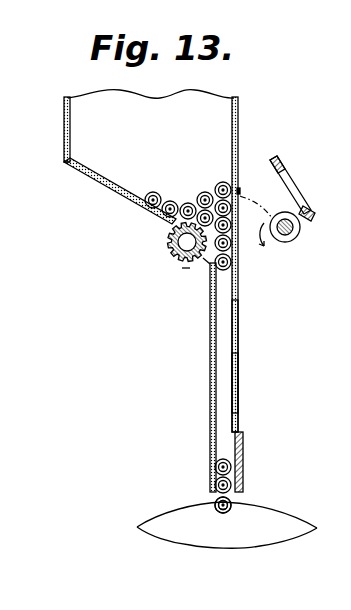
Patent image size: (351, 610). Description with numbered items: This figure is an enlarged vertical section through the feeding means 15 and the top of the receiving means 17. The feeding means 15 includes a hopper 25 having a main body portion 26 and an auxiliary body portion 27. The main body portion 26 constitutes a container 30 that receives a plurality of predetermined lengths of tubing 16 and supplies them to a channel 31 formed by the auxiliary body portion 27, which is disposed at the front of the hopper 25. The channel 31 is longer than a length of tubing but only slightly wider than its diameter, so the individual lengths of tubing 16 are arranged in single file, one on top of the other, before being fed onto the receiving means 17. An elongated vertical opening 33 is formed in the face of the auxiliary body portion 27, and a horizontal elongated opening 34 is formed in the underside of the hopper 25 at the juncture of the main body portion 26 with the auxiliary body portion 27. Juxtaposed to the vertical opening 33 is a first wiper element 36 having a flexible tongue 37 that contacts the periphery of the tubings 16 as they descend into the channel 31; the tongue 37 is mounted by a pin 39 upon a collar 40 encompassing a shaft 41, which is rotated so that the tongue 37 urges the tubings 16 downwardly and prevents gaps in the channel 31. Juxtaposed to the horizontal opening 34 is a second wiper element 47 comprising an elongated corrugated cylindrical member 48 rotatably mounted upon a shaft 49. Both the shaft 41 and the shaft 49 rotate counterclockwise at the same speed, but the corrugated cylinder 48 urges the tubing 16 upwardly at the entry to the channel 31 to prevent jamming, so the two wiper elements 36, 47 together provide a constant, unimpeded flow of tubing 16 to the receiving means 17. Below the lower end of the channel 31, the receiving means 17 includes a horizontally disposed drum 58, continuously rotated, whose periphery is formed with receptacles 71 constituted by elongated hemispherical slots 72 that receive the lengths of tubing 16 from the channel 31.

The feeding means 15 is at (242, 118).
The tubing 16 is at (202, 190).
The receiving means 17 is at (158, 512).
The hopper 25 is at (62, 160).
The main body portion 26 is at (64, 122).
The auxiliary body portion 27 is at (210, 367).
The container 30 is at (110, 175).
The channel 31 is at (238, 328).
The vertical opening 33 is at (240, 378).
The horizontal opening 34 is at (206, 262).
The first wiper element 36 is at (296, 190).
The flexible tongue 37 is at (280, 150).
The pin 39 is at (316, 217).
The collar 40 is at (298, 240).
The shaft 41 is at (282, 238).
The second wiper element 47 is at (174, 270).
The corrugated cylindrical member 48 is at (170, 252).
The shaft 49 is at (178, 238).
The drum 58 is at (290, 512).
The receptacles 71 is at (217, 502).
The slots 72 is at (229, 501).